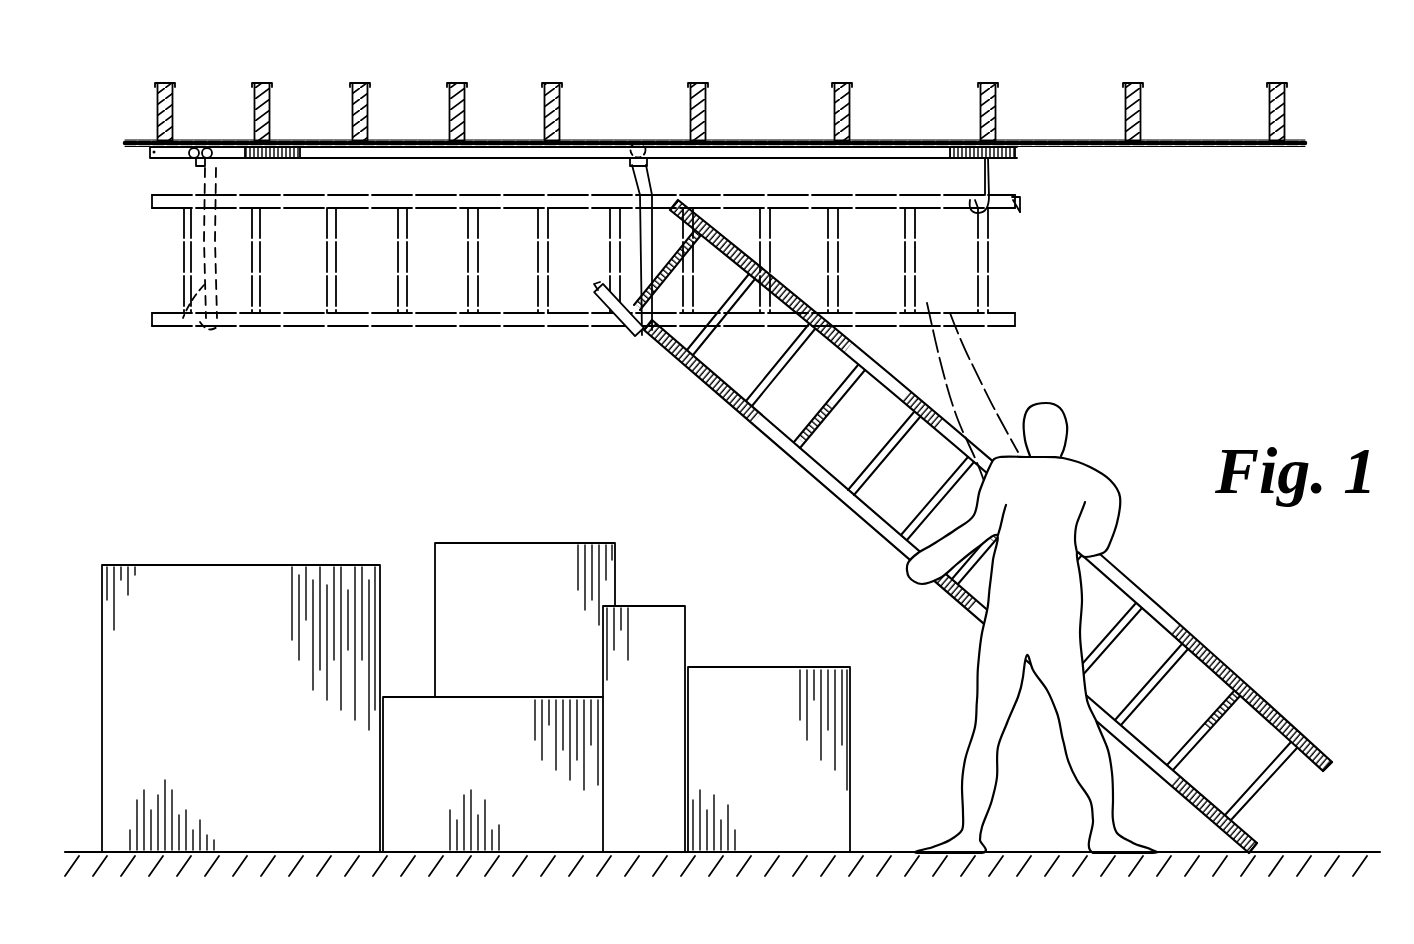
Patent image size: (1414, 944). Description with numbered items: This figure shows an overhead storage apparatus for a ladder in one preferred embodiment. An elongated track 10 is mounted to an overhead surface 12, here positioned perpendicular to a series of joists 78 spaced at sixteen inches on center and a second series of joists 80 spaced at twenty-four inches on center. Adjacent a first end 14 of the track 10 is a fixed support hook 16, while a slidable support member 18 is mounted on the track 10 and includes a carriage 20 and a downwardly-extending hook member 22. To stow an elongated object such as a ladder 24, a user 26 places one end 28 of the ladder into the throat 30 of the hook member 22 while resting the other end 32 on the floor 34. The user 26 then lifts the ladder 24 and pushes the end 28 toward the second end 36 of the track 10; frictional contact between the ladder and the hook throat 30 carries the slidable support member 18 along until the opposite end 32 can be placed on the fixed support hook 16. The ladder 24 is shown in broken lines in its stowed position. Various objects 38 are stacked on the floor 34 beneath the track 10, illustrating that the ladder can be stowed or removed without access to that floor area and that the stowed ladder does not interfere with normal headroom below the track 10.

The elongated track 10 is at (777, 152).
The overhead surface 12 is at (1197, 151).
The first end of the track 14 is at (1000, 160).
The fixed support hook 16 is at (985, 173).
The slidable support member 18 is at (184, 177).
The carriage 20 is at (661, 136).
The hook member 22 is at (654, 208).
The ladder 24 is at (742, 524).
The user 26 is at (1090, 462).
The one end of the ladder 28 is at (950, 586).
The throat of the hook 30 is at (619, 309).
The other end of the ladder 32 is at (1172, 525).
The floor 34 is at (878, 851).
The second end of the track 36 is at (150, 152).
The objects 38 is at (253, 718).
The joists 78 is at (262, 83).
The second series of joists 80 is at (706, 95).